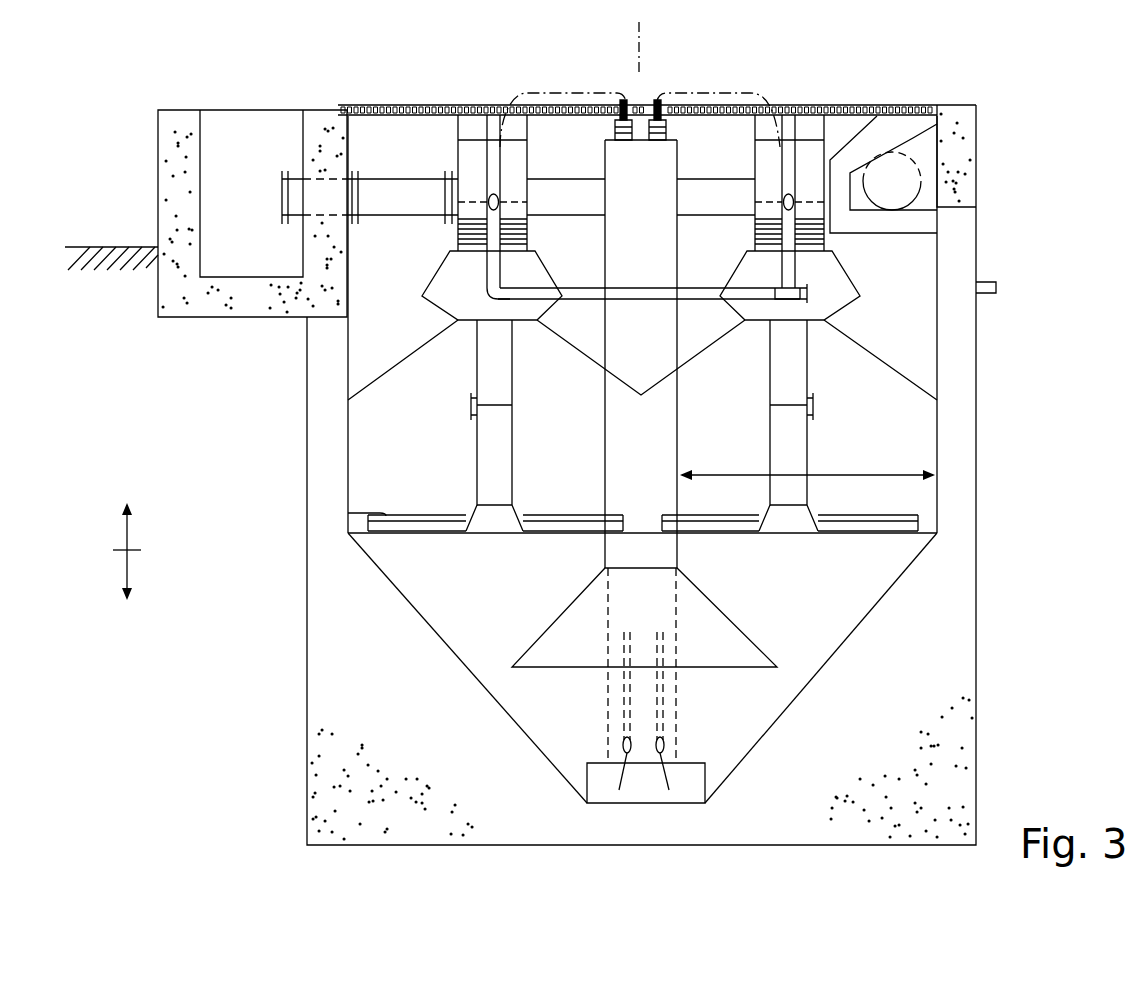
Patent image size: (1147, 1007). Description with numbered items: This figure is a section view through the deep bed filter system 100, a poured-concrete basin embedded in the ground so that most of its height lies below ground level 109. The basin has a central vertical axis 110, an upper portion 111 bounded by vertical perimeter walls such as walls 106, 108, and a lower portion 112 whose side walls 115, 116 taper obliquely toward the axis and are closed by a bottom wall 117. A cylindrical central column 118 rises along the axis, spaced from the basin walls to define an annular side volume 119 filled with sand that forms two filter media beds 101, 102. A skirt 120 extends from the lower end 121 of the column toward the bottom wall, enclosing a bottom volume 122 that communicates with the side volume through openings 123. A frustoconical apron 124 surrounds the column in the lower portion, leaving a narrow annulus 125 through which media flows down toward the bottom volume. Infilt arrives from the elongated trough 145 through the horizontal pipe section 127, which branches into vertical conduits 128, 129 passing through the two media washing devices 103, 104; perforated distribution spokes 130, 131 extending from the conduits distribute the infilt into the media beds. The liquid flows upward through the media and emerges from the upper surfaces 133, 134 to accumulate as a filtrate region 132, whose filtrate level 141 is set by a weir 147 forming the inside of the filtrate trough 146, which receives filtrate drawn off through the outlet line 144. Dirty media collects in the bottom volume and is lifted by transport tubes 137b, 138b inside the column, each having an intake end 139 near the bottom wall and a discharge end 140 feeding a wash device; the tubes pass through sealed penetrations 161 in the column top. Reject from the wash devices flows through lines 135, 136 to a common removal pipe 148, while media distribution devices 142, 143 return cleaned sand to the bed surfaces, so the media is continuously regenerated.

The deep bed filter system 100 is at (183, 76).
The filter media bed 101 is at (373, 435).
The filter media bed 102 is at (910, 428).
The media washing device 103 is at (452, 155).
The media washing device 104 is at (871, 108).
The upright wall 106 is at (957, 472).
The upright wall 108 is at (323, 490).
The ground level 109 is at (130, 247).
The central vertical axis 110 is at (641, 64).
The upper portion 111 is at (130, 541).
The lower portion 112 is at (130, 566).
The side wall 115 is at (420, 603).
The side wall 116 is at (859, 613).
The bottom wall 117 is at (620, 805).
The central column 118 is at (680, 403).
The annular side volume 119 is at (872, 472).
The skirt 120 is at (707, 777).
The lower end of central column 121 is at (700, 772).
The bottom volume 122 is at (692, 790).
The skirt opening 123 is at (597, 772).
The frustoconical apron 124 is at (723, 610).
The annulus 125 is at (783, 664).
The pipe section 127 is at (379, 173).
The vertical conduit 128 is at (477, 355).
The vertical conduit 129 is at (880, 330).
The distribution spoke 130 is at (367, 513).
The distribution spoke 131 is at (887, 510).
The filtrate region 132 is at (380, 270).
The upper surface of media bed 133 is at (365, 384).
The upper surface of media bed 134 is at (903, 293).
The reject line 135 is at (499, 246).
The reject line 136 is at (857, 269).
The transport tube 137b is at (623, 716).
The transport tube 138b is at (667, 722).
The intake end 139 is at (661, 753).
The discharge end 140 is at (778, 140).
The filtrate level 141 is at (913, 104).
The media distribution device 142 is at (412, 299).
The media distribution device 143 is at (792, 254).
The outlet line 144 is at (918, 172).
The infilt trough 145 is at (212, 163).
The filtrate trough 146 is at (915, 142).
The weir 147 is at (840, 197).
The common removal pipe 148 is at (688, 288).
The sealed penetration 161 is at (631, 117).